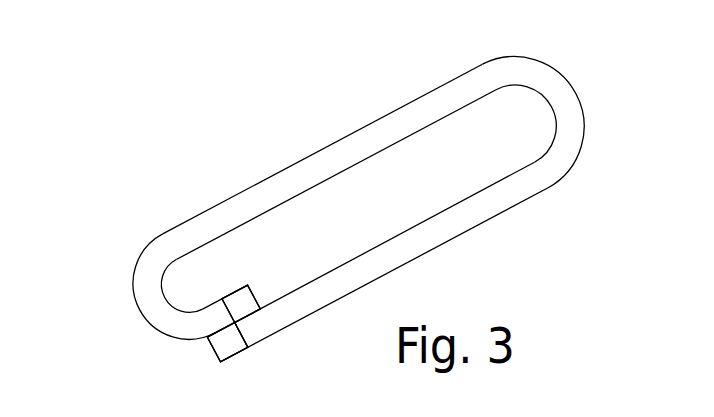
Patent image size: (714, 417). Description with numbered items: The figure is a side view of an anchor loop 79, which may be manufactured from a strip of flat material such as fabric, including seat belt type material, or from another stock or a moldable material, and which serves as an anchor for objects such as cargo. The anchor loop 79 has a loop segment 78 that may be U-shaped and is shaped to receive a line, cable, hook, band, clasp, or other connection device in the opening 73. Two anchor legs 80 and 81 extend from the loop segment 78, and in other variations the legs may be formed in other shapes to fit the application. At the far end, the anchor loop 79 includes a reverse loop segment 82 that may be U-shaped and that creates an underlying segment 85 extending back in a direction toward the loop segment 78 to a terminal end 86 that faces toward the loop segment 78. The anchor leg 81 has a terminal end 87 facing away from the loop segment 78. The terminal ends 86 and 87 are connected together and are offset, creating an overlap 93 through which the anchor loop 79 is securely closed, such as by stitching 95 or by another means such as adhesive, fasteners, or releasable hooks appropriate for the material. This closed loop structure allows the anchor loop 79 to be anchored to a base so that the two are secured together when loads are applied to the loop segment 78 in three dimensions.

The opening 73 is at (513, 130).
The loop segment 78 is at (552, 75).
The anchor loop 79 is at (272, 141).
The anchor leg 80 is at (338, 147).
The anchor leg 81 is at (505, 200).
The reverse loop segment 82 is at (135, 293).
The underlying segment 85 is at (166, 340).
The terminal end 86 is at (250, 298).
The terminal end 87 is at (213, 357).
The overlap 93 is at (245, 322).
The stitching 95 is at (232, 303).